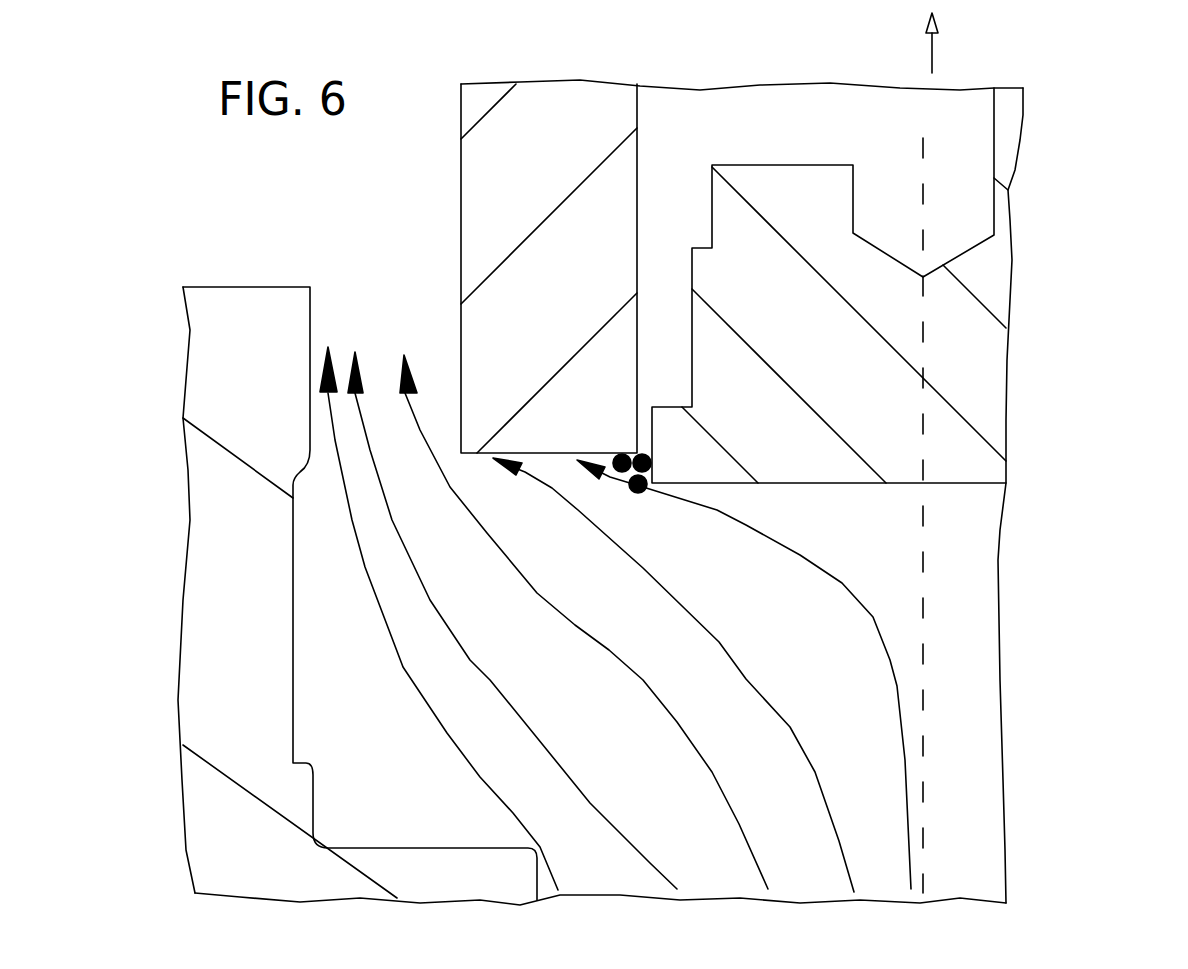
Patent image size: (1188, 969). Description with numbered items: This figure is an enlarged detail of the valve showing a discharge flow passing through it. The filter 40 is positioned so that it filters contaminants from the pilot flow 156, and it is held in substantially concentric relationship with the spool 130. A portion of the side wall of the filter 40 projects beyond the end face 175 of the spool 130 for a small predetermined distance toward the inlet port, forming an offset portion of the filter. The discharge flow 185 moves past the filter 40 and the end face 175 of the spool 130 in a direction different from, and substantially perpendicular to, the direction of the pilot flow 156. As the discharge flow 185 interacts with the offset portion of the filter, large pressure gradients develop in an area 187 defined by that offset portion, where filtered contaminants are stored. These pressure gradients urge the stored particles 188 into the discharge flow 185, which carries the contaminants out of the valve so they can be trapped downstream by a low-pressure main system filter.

The filter 40 is at (983, 403).
The spool 130 is at (533, 143).
The pilot flow 156 is at (932, 57).
The end face 175 is at (557, 453).
The discharge flow 185 is at (790, 727).
The area 187 is at (560, 473).
The stored particles 188 is at (650, 455).